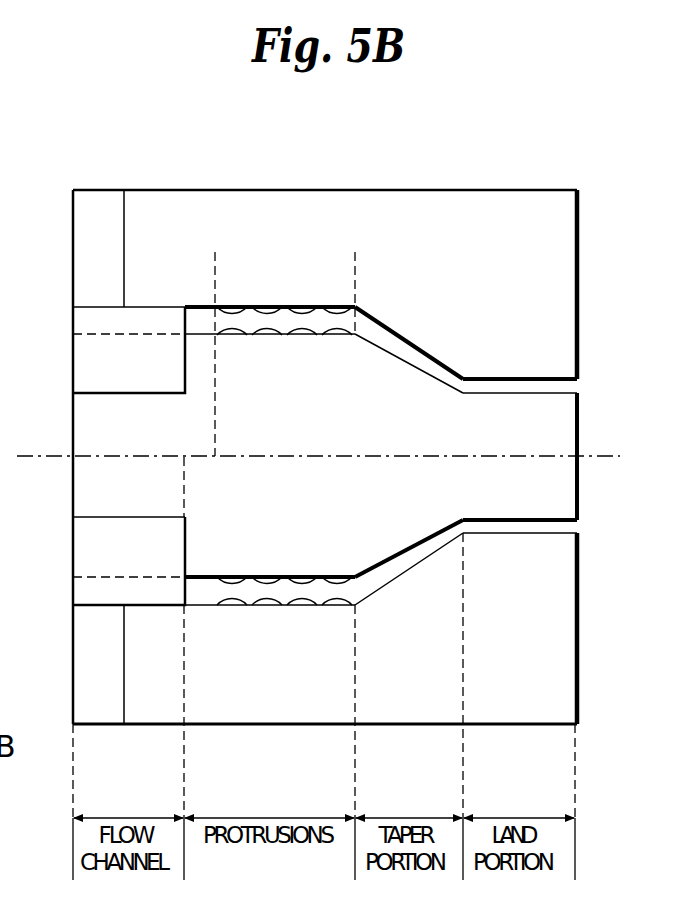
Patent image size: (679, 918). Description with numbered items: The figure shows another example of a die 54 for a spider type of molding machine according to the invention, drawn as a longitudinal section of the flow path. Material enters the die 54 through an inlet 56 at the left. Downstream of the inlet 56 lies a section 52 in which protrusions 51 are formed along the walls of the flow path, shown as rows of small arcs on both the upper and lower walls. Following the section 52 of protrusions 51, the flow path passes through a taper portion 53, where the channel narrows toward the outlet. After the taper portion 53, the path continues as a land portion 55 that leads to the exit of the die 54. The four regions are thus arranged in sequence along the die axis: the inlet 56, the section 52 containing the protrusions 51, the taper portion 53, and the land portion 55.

The protrusions 51 is at (268, 566).
The section 52 is at (354, 272).
The taper portion 53 is at (420, 370).
The die 54 is at (446, 295).
The land portion 55 is at (578, 418).
The inlet 56 is at (73, 437).